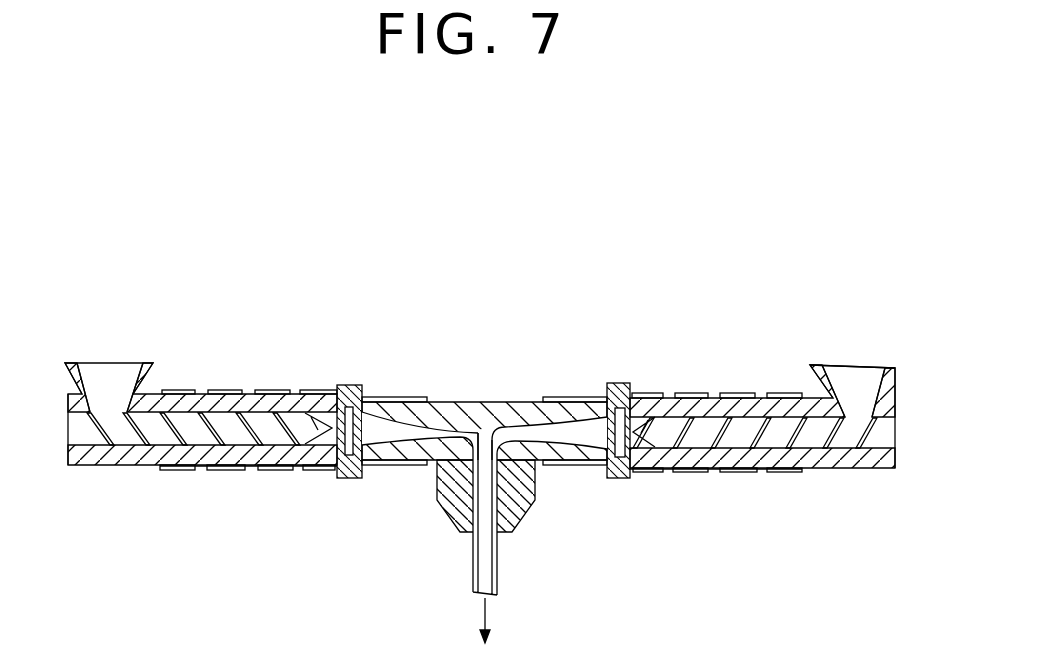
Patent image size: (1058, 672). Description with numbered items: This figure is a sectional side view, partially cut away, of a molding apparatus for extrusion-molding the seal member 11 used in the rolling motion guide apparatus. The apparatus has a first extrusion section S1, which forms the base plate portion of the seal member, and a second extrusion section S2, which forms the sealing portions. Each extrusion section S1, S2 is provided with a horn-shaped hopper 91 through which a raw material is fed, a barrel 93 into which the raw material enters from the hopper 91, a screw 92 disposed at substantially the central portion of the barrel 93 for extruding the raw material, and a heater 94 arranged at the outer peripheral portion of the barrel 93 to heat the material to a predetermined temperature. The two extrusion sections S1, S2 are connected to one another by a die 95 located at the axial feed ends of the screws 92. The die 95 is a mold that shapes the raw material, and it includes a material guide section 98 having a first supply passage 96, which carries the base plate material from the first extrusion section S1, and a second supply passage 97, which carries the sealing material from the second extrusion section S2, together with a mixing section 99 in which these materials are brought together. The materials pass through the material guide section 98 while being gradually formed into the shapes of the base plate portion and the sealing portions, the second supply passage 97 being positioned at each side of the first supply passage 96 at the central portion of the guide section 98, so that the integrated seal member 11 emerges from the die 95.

The horn-shaped hopper 91 is at (83, 362).
The screw 92 is at (117, 447).
The barrel 93 is at (254, 392).
The heater 94 is at (204, 392).
The die 95 is at (472, 398).
The first supply passage 96 is at (571, 430).
The second supply passage 97 is at (393, 428).
The material guide section 98 is at (518, 401).
The mixing section 99 is at (448, 503).
The seal member 11 is at (494, 573).
The first extrusion section S1 is at (710, 488).
The second extrusion section S2 is at (232, 483).